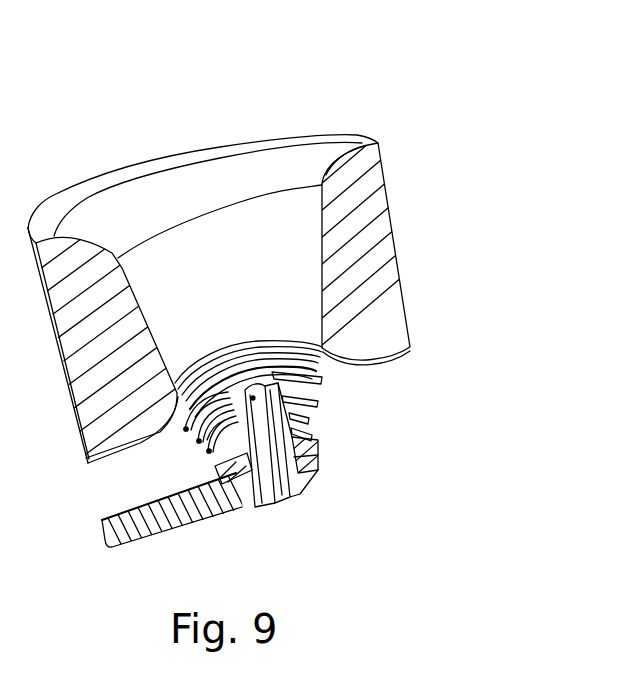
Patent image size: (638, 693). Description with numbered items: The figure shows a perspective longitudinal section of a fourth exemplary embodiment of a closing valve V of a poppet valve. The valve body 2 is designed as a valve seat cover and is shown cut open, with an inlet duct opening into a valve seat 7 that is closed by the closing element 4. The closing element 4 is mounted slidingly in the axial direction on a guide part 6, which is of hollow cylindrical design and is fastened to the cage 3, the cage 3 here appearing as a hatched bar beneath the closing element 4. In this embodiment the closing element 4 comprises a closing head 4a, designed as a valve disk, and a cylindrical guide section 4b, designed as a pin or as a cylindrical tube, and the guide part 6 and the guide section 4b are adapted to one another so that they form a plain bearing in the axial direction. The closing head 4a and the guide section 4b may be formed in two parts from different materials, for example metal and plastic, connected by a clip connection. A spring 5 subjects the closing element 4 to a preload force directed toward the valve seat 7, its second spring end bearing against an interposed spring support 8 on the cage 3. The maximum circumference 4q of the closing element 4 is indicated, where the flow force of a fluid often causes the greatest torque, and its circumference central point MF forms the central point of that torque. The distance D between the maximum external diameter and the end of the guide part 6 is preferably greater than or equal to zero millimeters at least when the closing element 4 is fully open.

The closing valve V is at (410, 66).
The valve body 2 is at (375, 257).
The cage 3 is at (185, 527).
The closing element 4 is at (318, 461).
The closing head 4a is at (317, 394).
The guide section 4b is at (282, 500).
The maximum circumference 4q is at (322, 375).
The spring 5 is at (207, 440).
The guide part 6 is at (316, 481).
The valve seat 7 is at (383, 362).
The spring support 8 is at (320, 450).
The distance D is at (262, 385).
The circumference central point MF is at (241, 500).